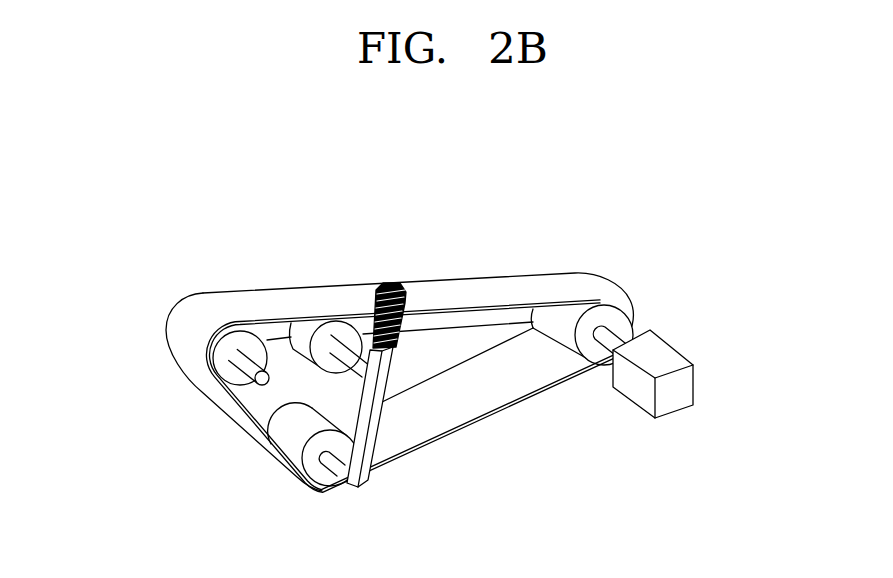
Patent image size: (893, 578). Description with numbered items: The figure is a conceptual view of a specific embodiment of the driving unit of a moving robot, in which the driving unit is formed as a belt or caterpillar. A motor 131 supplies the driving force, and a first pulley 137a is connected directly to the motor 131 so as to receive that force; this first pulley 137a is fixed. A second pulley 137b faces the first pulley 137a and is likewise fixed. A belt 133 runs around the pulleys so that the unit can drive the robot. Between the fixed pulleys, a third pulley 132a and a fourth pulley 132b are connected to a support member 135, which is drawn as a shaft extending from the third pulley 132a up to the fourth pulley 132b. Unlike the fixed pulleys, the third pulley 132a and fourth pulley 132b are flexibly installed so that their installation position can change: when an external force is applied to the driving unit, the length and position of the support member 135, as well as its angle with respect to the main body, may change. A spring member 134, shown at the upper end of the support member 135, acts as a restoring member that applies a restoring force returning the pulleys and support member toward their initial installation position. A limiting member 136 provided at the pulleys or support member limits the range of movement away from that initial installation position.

The motor 131 is at (672, 410).
The third pulley 132a is at (322, 479).
The fourth pulley 132b is at (330, 327).
The belt 133 is at (507, 283).
The spring member 134 is at (393, 290).
The support member 135 is at (372, 452).
The limiting member 136 is at (465, 318).
The first pulley 137a is at (630, 318).
The second pulley 137b is at (222, 372).